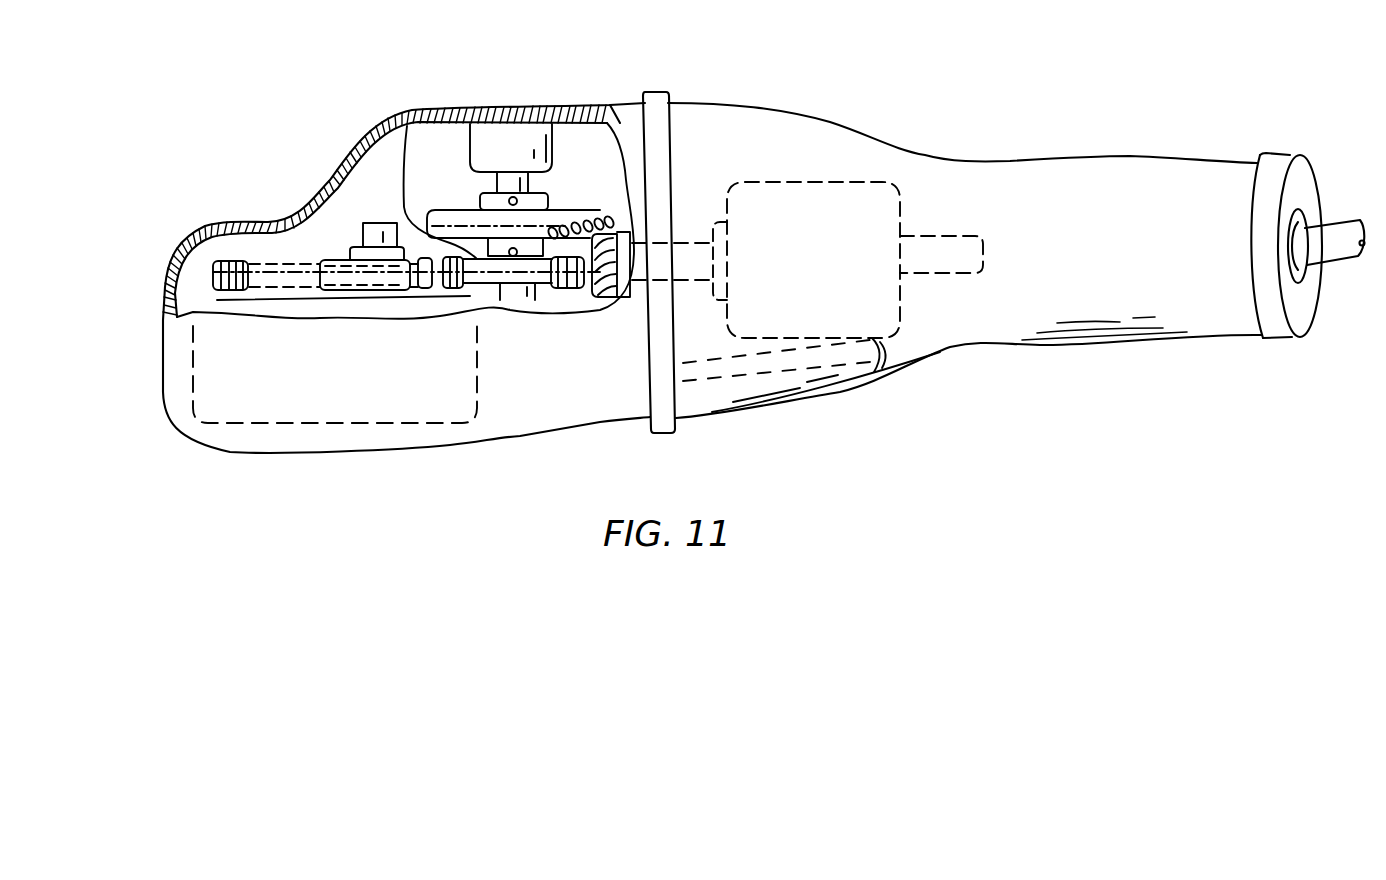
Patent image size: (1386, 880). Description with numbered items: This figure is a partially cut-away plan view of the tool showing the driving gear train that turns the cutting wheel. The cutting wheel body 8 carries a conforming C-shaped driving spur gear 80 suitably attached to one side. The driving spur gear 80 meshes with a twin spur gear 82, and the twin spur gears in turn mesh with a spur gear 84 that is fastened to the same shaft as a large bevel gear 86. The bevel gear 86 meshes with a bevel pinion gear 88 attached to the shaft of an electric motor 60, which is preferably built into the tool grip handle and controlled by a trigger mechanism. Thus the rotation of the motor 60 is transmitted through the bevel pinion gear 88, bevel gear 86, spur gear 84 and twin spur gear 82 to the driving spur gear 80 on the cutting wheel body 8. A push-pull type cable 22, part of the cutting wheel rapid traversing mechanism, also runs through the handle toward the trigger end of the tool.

The cutting wheel body 8 is at (348, 427).
The push-pull type cable 22 is at (785, 372).
The electric motor 60 is at (897, 200).
The driving spur gear 80 is at (257, 272).
The twin spur gear 82 is at (336, 270).
The spur gear 84 is at (404, 135).
The bevel gear 86 is at (613, 218).
The bevel pinion gear 88 is at (618, 232).